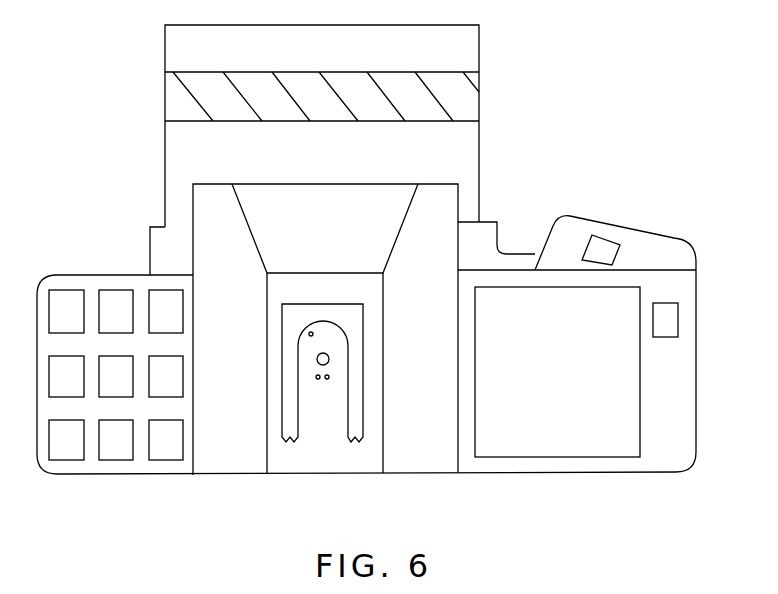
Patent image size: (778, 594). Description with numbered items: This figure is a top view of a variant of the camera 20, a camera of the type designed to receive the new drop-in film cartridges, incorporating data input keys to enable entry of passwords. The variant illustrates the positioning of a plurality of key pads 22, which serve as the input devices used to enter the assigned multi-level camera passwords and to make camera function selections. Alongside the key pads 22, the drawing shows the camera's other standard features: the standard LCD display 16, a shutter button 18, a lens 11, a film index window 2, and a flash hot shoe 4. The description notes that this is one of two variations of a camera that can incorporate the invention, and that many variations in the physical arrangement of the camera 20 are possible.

The film index window 2 is at (610, 246).
The flash hot shoe 4 is at (317, 435).
The lens 11 is at (165, 121).
The LCD display 16 is at (605, 457).
The shutter button 18 is at (679, 322).
The camera 20 is at (430, 473).
The key pads 22 is at (77, 285).